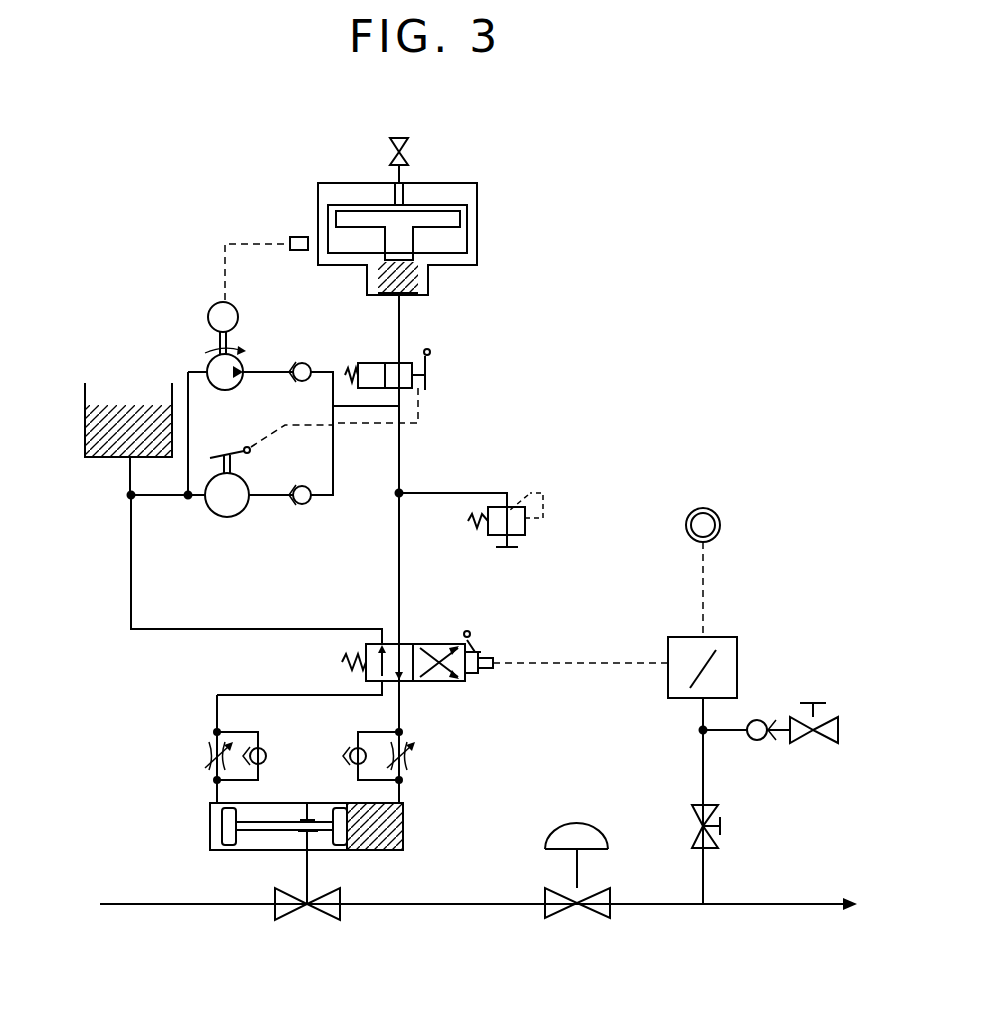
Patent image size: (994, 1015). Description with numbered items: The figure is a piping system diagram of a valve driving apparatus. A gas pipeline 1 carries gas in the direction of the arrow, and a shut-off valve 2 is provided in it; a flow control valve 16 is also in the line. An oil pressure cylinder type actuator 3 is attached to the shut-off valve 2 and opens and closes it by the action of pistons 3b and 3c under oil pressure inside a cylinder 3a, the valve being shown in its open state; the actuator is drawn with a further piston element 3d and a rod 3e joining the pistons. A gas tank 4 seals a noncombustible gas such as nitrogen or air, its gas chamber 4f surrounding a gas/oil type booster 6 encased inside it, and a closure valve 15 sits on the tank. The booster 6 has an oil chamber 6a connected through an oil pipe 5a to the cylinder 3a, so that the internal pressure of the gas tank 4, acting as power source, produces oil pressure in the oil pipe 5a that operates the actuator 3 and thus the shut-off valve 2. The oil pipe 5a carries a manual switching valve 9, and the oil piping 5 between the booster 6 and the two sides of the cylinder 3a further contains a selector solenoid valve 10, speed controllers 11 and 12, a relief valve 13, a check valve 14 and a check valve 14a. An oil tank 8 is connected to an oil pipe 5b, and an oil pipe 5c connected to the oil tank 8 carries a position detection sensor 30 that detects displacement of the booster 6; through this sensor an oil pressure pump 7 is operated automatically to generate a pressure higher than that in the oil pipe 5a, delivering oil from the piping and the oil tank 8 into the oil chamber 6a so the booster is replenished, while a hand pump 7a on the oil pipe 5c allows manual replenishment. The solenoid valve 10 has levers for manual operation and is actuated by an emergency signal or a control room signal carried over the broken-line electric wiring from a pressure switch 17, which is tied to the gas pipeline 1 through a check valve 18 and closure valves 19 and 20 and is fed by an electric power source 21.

The gas pipeline 1 is at (675, 906).
The shut-off valve 2 is at (322, 920).
The oil pressure cylinder type actuator 3 is at (289, 892).
The cylinder 3a is at (264, 852).
The piston 3b is at (342, 846).
The piston 3c is at (388, 849).
The piston 3d is at (212, 849).
The piston rod 3e is at (228, 848).
The gas tank 4 is at (424, 218).
The gas chamber 4f is at (420, 187).
The oil pipe 5 is at (410, 485).
The oil pipe 5a is at (401, 598).
The oil pipe 5b is at (152, 630).
The oil pipe 5c is at (163, 498).
The gas/oil type booster 6 is at (462, 238).
The oil chamber 6a is at (410, 283).
The oil pressure pump 7 is at (210, 360).
The hand pump 7a is at (242, 517).
The oil tank 8 is at (100, 459).
The manual switching valve 9 is at (430, 375).
The selector solenoid valve 10 is at (461, 683).
The speed controller 11 is at (205, 757).
The speed controller 12 is at (410, 759).
The relief valve 13 is at (512, 505).
The check valve 14 is at (306, 363).
The check valve 14a is at (310, 504).
The closure valve 15 is at (388, 147).
The flow control valve 16 is at (558, 918).
The pressure switch 17 is at (738, 665).
The check valve 18 is at (757, 742).
The closure valve 19 is at (718, 848).
The closure valve 20 is at (800, 744).
The electric power source 21 is at (722, 527).
The position detection sensor 30 is at (297, 236).